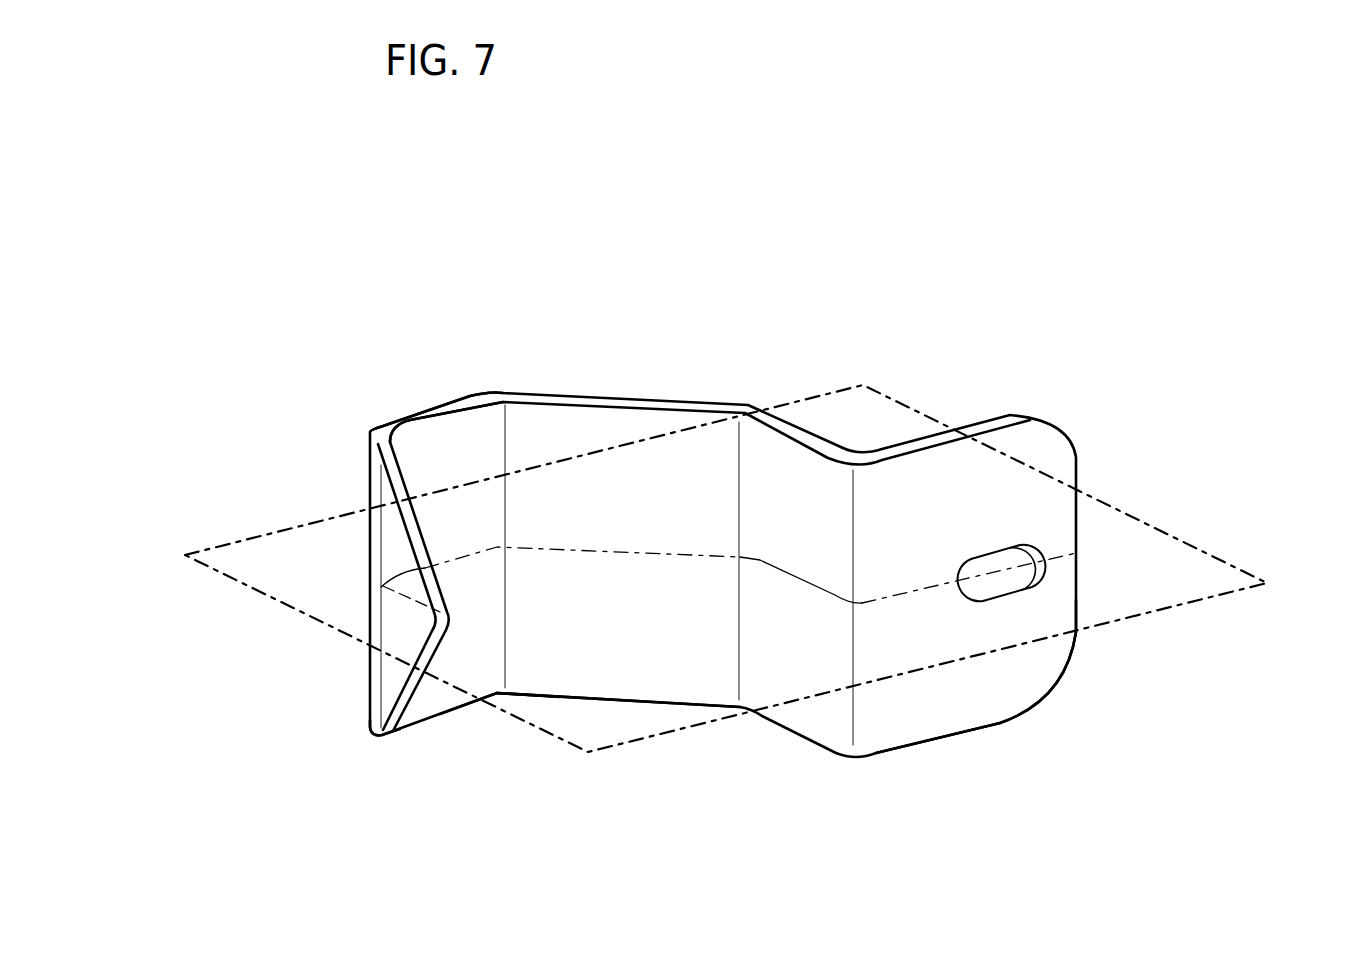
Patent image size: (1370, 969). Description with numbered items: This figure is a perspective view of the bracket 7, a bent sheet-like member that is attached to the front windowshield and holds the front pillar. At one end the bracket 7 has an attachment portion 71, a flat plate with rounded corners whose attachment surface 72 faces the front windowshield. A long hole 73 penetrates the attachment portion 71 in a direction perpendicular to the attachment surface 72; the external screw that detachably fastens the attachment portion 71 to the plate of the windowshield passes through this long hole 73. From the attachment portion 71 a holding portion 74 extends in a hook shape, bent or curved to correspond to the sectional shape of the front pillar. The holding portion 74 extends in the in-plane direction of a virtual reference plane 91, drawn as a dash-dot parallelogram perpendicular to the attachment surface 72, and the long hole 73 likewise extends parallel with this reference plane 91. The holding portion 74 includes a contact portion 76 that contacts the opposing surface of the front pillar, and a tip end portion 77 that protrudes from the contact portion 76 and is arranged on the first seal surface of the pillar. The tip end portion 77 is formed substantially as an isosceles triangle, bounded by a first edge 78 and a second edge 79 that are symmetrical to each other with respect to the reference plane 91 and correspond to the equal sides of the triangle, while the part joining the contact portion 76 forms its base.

The bracket 7 is at (723, 581).
The attachment portion 71 is at (938, 741).
The attachment surface 72 is at (1018, 675).
The long hole 73 is at (990, 555).
The holding portion 74 is at (613, 704).
The contact portion 76 is at (452, 698).
The tip end portion 77 is at (396, 626).
The first edge 78 is at (408, 700).
The second edge 79 is at (405, 487).
The reference plane 91 is at (1170, 533).